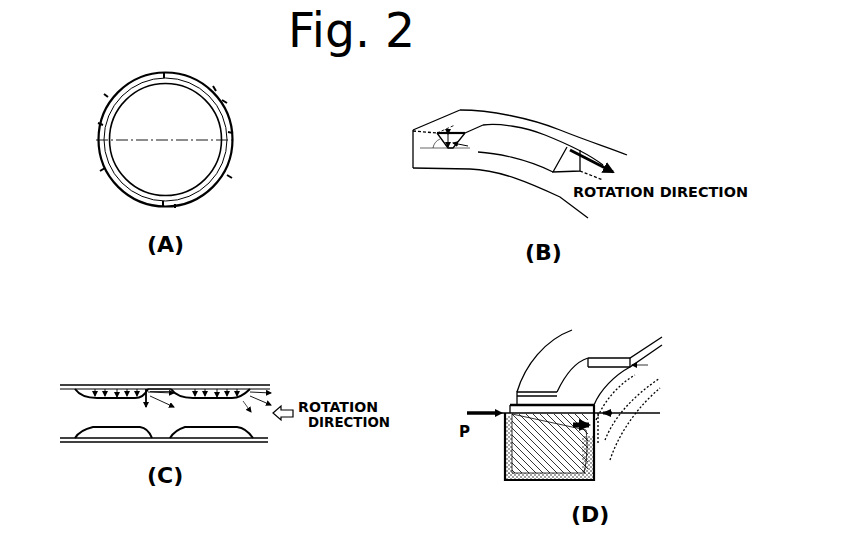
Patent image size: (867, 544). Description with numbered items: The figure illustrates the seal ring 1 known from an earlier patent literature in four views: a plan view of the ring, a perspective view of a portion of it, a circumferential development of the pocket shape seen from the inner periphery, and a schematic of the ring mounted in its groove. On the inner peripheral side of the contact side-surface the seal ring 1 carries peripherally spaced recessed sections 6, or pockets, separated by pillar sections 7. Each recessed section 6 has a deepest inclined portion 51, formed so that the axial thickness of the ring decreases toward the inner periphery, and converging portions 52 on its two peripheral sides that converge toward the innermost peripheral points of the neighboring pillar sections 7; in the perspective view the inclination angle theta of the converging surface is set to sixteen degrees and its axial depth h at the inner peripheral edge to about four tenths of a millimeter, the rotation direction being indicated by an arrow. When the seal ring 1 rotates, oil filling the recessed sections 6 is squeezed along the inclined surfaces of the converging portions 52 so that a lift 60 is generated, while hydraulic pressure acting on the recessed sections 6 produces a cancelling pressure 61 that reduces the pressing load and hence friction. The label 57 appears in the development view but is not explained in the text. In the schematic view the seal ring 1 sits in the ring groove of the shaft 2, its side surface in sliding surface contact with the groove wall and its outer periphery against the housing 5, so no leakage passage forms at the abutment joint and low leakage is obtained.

The seal ring 1 is at (623, 350).
The shaft 2 is at (559, 442).
The housing 5 is at (559, 395).
The recessed section (pocket) 6 is at (217, 110).
The pillar section 7 is at (225, 132).
The deepest inclined portion 51 is at (525, 144).
The converging portion 52 is at (468, 129).
The land portion 57 is at (162, 391).
The lift 60 is at (248, 410).
The cancelling pressure 61 is at (238, 391).